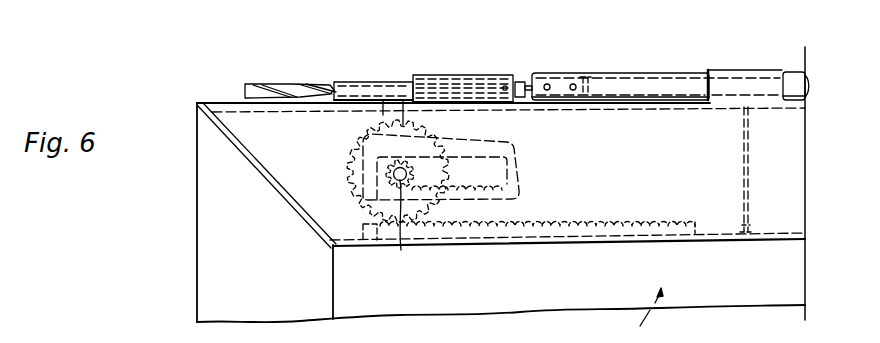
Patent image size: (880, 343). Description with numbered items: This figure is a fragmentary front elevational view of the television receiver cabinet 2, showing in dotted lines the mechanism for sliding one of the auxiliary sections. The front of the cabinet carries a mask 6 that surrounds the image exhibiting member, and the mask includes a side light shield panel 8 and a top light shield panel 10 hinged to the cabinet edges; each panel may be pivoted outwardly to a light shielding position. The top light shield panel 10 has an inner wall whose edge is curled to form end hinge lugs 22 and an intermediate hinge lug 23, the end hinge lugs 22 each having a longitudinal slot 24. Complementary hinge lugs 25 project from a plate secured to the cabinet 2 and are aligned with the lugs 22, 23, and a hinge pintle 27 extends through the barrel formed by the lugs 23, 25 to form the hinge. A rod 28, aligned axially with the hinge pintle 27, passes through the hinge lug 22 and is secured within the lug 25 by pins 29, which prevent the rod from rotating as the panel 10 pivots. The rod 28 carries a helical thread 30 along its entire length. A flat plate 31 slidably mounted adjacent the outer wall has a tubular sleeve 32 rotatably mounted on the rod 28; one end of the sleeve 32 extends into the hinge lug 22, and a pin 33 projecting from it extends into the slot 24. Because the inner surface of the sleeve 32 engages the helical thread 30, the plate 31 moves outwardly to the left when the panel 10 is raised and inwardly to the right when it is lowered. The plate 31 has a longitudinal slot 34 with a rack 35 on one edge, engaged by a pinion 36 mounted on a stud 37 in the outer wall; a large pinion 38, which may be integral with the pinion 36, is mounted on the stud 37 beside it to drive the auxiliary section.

The television receiver cabinet 2 is at (379, 331).
The mask 6 is at (640, 315).
The side light shield panel 8 is at (205, 232).
The top light shield panel 10 is at (725, 212).
The end hinge lug 22 is at (422, 77).
The intermediate hinge lug 23 is at (713, 77).
The longitudinal slot 24 is at (463, 88).
The complementary hinge lug 25 is at (620, 73).
The hinge pintle 27 is at (791, 170).
The rod 28 is at (282, 86).
The pins 29 is at (573, 84).
The helical thread 30 is at (313, 85).
The flat plate 31 is at (520, 196).
The tubular sleeve 32 is at (363, 83).
The pin 33 is at (505, 90).
The longitudinal slot 34 is at (509, 168).
The rack 35 is at (478, 180).
The pinion 36 is at (345, 155).
The stud 37 is at (397, 232).
The large pinion 38 is at (345, 181).